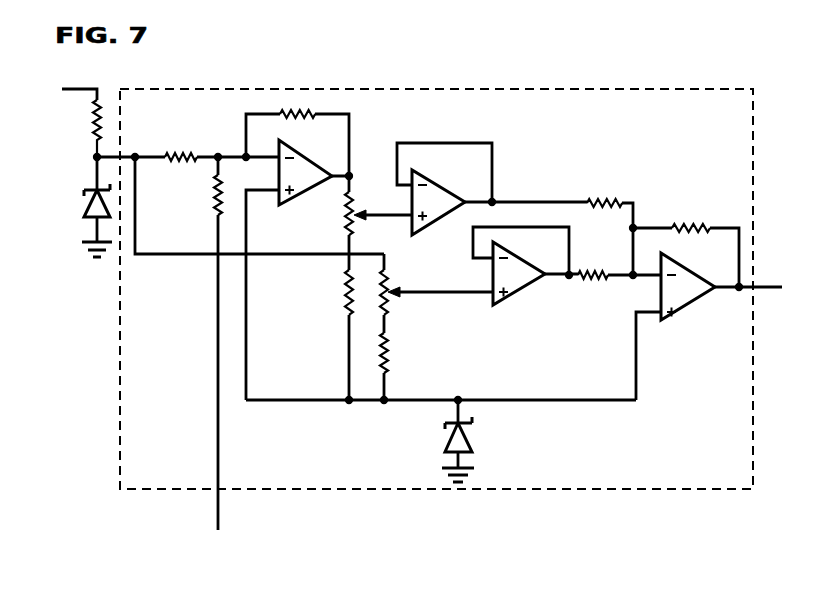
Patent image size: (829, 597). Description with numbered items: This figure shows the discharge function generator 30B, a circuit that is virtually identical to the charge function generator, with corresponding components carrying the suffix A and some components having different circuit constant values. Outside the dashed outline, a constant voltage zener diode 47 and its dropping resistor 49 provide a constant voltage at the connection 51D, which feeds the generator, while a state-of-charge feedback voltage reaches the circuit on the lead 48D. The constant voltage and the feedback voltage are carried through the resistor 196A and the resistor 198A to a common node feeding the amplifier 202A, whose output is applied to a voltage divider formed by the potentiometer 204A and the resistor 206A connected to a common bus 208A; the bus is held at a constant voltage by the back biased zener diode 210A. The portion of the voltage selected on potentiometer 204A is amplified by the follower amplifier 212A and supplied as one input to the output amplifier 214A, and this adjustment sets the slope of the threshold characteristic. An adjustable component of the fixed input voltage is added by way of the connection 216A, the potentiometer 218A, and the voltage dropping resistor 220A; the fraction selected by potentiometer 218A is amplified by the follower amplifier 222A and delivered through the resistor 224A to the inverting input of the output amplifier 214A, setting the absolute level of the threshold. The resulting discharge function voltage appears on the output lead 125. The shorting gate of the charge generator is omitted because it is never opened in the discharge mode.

The discharge function generator 30B is at (345, 89).
The dropping resistor 49 is at (93, 112).
The constant voltage zener diode 47 is at (88, 208).
The input line 51D is at (110, 155).
The resistor 196A is at (180, 155).
The resistor 198A is at (212, 203).
The line 48D is at (220, 514).
The connection 216A is at (200, 256).
The amplifier 202A is at (336, 140).
The potentiometer 204A is at (340, 205).
The resistor 206A is at (340, 300).
The potentiometer 218A is at (395, 300).
The voltage dropping resistor 220A is at (392, 345).
The common bus 208A is at (563, 398).
The back biased zener diode 210A is at (470, 440).
The follower amplifier 212A is at (462, 160).
The follower amplifier 222A is at (495, 270).
The resistor 224A is at (607, 280).
The output amplifier 214A is at (668, 308).
The output line 125 is at (773, 290).